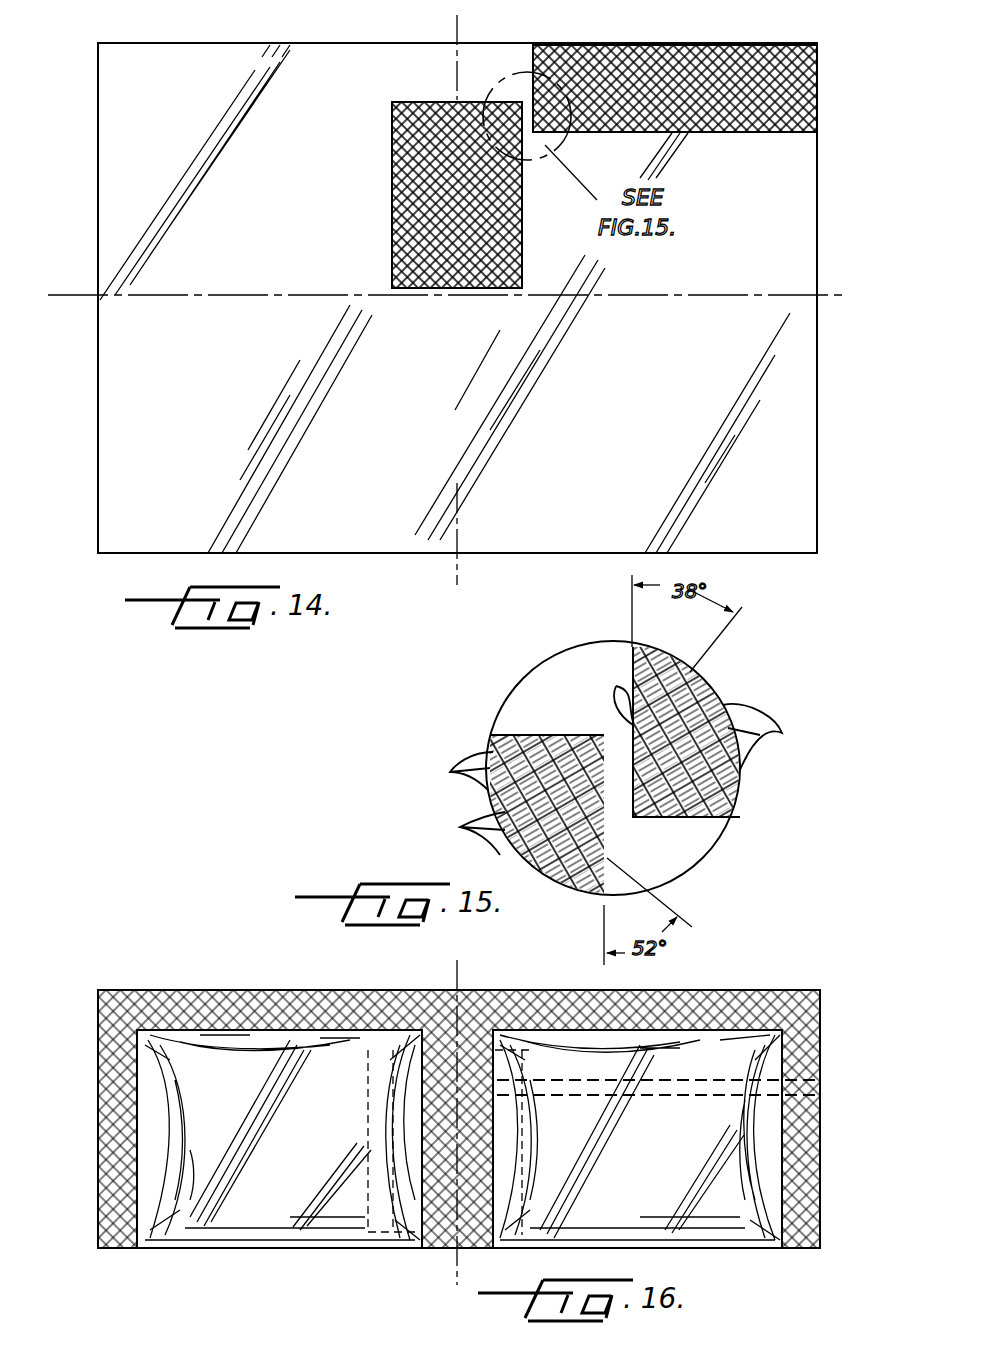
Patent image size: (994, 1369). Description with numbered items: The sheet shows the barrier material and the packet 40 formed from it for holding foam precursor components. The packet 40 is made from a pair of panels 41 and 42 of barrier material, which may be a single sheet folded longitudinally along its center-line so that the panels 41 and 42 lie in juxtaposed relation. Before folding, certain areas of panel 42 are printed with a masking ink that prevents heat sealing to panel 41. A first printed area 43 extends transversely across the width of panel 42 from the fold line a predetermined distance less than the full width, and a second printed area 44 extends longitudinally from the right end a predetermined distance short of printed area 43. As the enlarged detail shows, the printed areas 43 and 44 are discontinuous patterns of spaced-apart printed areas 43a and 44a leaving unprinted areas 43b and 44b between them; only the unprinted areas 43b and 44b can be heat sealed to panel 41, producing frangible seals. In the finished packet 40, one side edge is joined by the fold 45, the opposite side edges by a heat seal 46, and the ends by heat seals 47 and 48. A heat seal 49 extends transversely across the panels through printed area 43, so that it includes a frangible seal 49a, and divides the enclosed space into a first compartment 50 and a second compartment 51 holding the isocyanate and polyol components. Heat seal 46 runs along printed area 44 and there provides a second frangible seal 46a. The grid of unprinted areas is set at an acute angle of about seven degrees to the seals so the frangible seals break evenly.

In FIG. 16, the packet 40 is at (172, 985).
In FIG. 14, the panel 41 is at (212, 427).
In FIG. 16, the panel 41 is at (158, 1067).
In FIG. 14, the panel 42 is at (248, 200).
In FIG. 14, the first printed area 43 is at (392, 135).
In FIG. 15, the first printed area 43 is at (497, 733).
In FIG. 16, the first printed area 43 is at (395, 1096).
In FIG. 15, the printed areas 43a is at (450, 772).
In FIG. 15, the unprinted areas 43b is at (460, 827).
In FIG. 14, the second printed area 44 is at (713, 50).
In FIG. 15, the second printed area 44 is at (633, 660).
In FIG. 16, the second printed area 44 is at (595, 1082).
In FIG. 15, the printed areas 44a is at (616, 686).
In FIG. 15, the unprinted areas 44b is at (782, 733).
In FIG. 16, the fold 45 is at (330, 1246).
In FIG. 16, the heat seal 46 is at (258, 1000).
In FIG. 16, the second frangible seal 46a is at (682, 1097).
In FIG. 16, the heat seal 47 is at (110, 1117).
In FIG. 16, the heat seal 48 is at (807, 1133).
In FIG. 16, the heat seal 49 is at (442, 1228).
In FIG. 16, the frangible seal 49a is at (355, 1118).
In FIG. 16, the first compartment 50 is at (225, 1212).
In FIG. 16, the second compartment 51 is at (720, 1207).